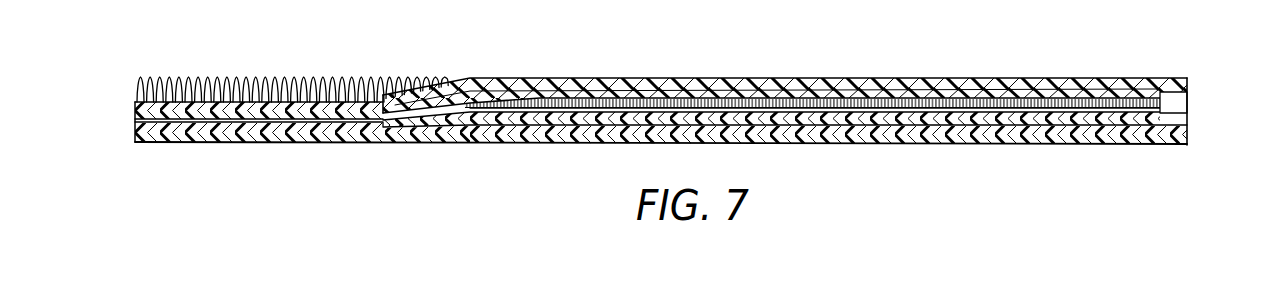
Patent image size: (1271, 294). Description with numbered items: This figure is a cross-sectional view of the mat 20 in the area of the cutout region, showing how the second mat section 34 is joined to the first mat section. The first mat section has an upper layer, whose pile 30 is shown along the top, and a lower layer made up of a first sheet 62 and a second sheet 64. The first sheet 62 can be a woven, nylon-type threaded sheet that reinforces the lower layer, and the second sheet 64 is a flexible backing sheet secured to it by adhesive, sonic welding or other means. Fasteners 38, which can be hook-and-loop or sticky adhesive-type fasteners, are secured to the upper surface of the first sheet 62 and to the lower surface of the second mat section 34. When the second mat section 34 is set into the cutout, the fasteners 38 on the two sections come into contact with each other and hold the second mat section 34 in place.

The cleaning device 20 is at (661, 106).
The bristles 30 is at (254, 78).
The second mat section 34 is at (747, 68).
The fasteners 38 is at (580, 99).
The first sheet 62 is at (413, 122).
The second sheet 64 is at (457, 140).